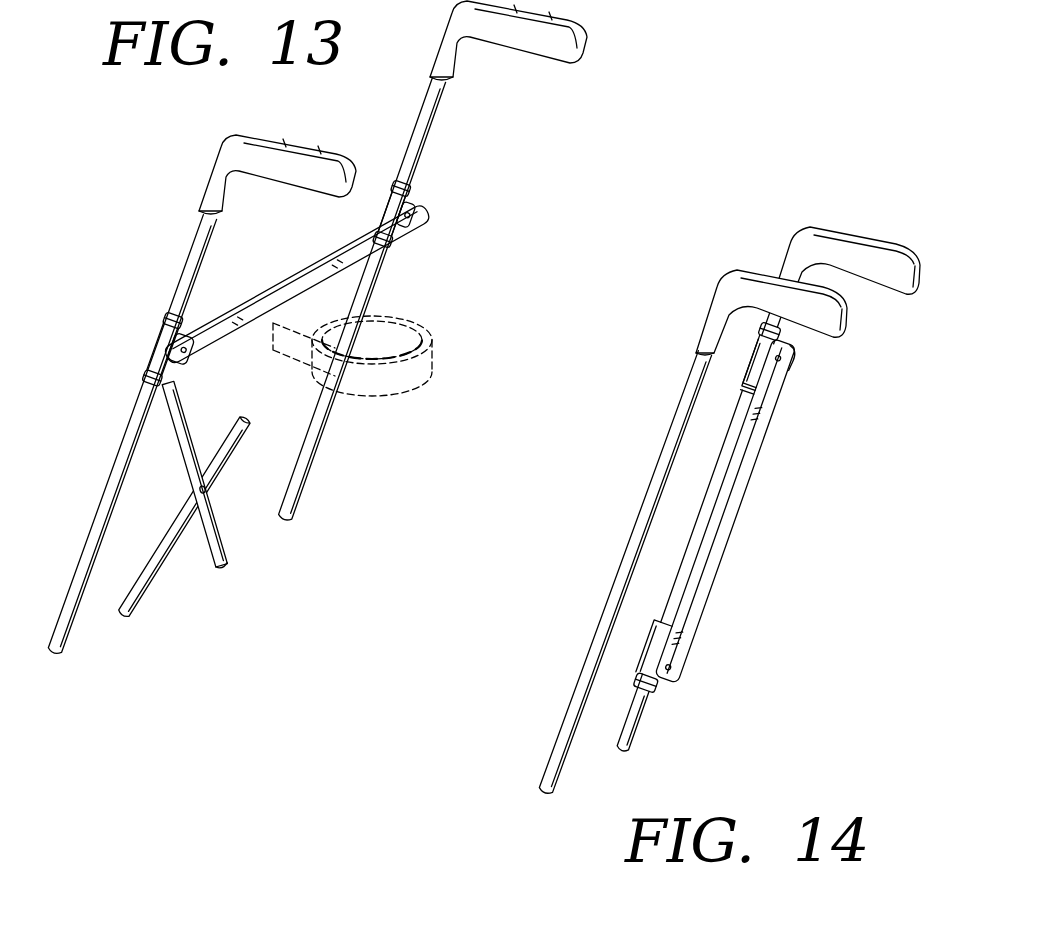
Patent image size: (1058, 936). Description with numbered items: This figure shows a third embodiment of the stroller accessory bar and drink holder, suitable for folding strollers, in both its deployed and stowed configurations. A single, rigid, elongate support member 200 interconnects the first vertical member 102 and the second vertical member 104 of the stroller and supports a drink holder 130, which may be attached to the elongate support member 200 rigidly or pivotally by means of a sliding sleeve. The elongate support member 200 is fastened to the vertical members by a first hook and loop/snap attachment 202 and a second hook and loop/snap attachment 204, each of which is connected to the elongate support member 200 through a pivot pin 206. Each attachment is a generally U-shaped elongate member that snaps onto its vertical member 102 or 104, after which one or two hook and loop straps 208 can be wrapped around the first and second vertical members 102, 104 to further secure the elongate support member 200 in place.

In FIG. 13, the first vertical member 102 is at (190, 260).
In FIG. 14, the first vertical member 102 is at (623, 567).
In FIG. 13, the second vertical member 104 is at (438, 104).
In FIG. 14, the second vertical member 104 is at (631, 738).
In FIG. 13, the drink holder 130 is at (386, 382).
In FIG. 13, the elongate support member 200 is at (308, 263).
In FIG. 14, the elongate support member 200 is at (737, 477).
In FIG. 13, the first hook and loop/snap attachment 202 is at (156, 347).
In FIG. 14, the first hook and loop/snap attachment 202 is at (653, 650).
In FIG. 13, the second hook and loop/snap attachment 204 is at (388, 203).
In FIG. 14, the second hook and loop/snap attachment 204 is at (748, 372).
In FIG. 13, the pivot pin 206 is at (417, 218).
In FIG. 14, the pivot pin 206 is at (783, 358).
In FIG. 13, the hook and loop strap 208 is at (413, 192).
In FIG. 14, the hook and loop strap 208 is at (742, 385).